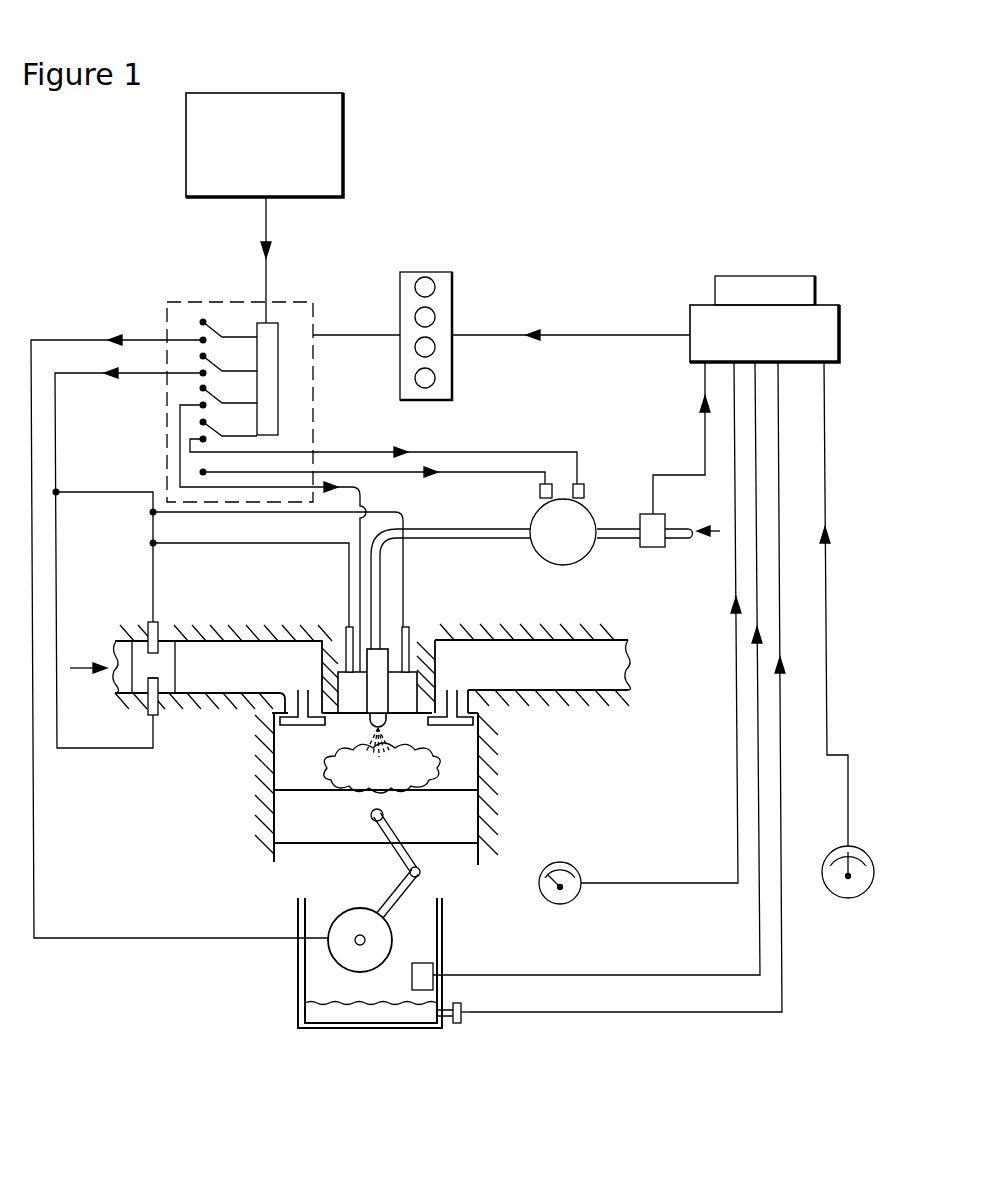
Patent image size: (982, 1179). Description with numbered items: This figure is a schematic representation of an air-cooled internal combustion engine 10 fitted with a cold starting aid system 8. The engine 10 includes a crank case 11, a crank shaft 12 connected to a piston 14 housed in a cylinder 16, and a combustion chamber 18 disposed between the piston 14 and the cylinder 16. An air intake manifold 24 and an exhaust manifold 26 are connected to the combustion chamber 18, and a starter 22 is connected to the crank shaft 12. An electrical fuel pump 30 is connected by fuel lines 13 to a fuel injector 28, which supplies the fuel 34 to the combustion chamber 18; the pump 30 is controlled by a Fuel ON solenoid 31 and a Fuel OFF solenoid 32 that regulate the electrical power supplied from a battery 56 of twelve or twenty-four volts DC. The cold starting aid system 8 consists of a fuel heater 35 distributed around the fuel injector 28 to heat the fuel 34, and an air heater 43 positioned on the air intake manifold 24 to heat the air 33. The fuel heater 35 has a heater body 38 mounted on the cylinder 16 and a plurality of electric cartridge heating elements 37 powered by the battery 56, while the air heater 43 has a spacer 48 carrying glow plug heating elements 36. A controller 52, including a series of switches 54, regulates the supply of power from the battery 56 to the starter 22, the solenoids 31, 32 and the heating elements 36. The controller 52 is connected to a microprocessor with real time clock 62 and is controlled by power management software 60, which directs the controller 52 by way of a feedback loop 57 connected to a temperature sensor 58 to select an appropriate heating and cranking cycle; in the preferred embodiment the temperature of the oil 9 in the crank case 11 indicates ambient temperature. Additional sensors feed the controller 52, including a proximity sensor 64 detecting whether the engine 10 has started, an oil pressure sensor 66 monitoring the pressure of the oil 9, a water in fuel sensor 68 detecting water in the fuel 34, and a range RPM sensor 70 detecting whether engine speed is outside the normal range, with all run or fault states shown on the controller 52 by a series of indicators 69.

The cold starting aid system 8 is at (434, 210).
The oil 9 is at (383, 1018).
The internal combustion engine 10 is at (204, 771).
The crank case 11 is at (325, 1030).
The crank shaft 12 is at (388, 896).
The fuel lines 13 is at (458, 528).
The piston 14 is at (293, 845).
The cylinder 16 is at (269, 780).
The combustion chamber 18 is at (287, 752).
The starter 22 is at (330, 960).
The air intake manifold 24 is at (244, 640).
The exhaust manifold 26 is at (532, 640).
The fuel injector 28 is at (435, 684).
The electrical fuel pump 30 is at (589, 516).
The "Fuel ON" solenoid 31 is at (586, 483).
The "Fuel OFF" solenoid 32 is at (537, 498).
The air 33 is at (74, 660).
The fuel 34 is at (719, 532).
The fuel heater 35 is at (336, 606).
The heating elements 36 is at (148, 624).
The heating elements 37 is at (343, 644).
The heater body 38 is at (402, 705).
The air heater 43 is at (172, 617).
The spacer 48 is at (148, 690).
The controller 52 is at (318, 282).
The switches 54 is at (223, 302).
The battery 56 is at (345, 120).
The feedback loop 57 is at (783, 957).
The temperature sensor 58 is at (447, 1021).
The power management software 60 is at (734, 275).
The microprocessor with real time clock 62 is at (689, 317).
The proximity sensor 64 is at (865, 846).
The oil pressure sensor 66 is at (423, 961).
The water in fuel sensor 68 is at (653, 547).
The indicators 69 is at (428, 277).
The range RPM sensor 70 is at (577, 878).